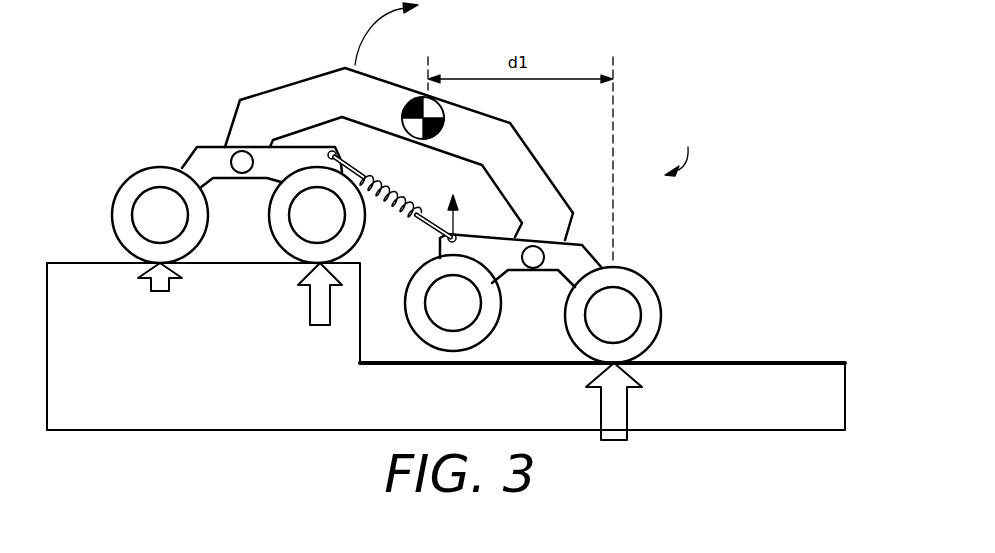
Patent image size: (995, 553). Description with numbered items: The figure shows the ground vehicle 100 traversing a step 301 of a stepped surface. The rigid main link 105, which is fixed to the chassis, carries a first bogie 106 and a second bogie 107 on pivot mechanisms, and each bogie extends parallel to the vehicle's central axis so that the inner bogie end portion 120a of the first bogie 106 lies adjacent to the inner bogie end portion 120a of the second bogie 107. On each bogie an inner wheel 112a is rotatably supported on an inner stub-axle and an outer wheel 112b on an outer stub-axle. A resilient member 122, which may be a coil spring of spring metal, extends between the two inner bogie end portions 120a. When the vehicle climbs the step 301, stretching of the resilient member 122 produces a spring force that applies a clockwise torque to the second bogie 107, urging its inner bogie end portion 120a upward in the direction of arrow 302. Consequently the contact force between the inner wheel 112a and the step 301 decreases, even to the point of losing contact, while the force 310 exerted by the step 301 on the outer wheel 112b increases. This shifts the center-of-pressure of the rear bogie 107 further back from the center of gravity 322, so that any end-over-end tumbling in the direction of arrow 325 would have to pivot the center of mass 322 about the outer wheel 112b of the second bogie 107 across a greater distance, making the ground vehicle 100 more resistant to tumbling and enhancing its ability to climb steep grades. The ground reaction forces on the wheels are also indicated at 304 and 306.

The ground vehicle 100 is at (683, 149).
The main link 105 is at (342, 106).
The first bogie 106 is at (185, 163).
The second bogie 107 is at (573, 253).
The inner wheel 112a is at (270, 227).
The outer wheel 112b is at (112, 210).
The inner bogie end portion 120a is at (343, 155).
The resilient member 122 is at (418, 210).
The step 301 is at (207, 381).
The arrow 302 is at (458, 203).
The ground reaction force at first wheel 304 is at (147, 288).
The ground reaction force at second wheel 306 is at (315, 308).
The force 310 is at (602, 412).
The center of gravity 322 is at (410, 108).
The arrow 325 is at (381, 34).